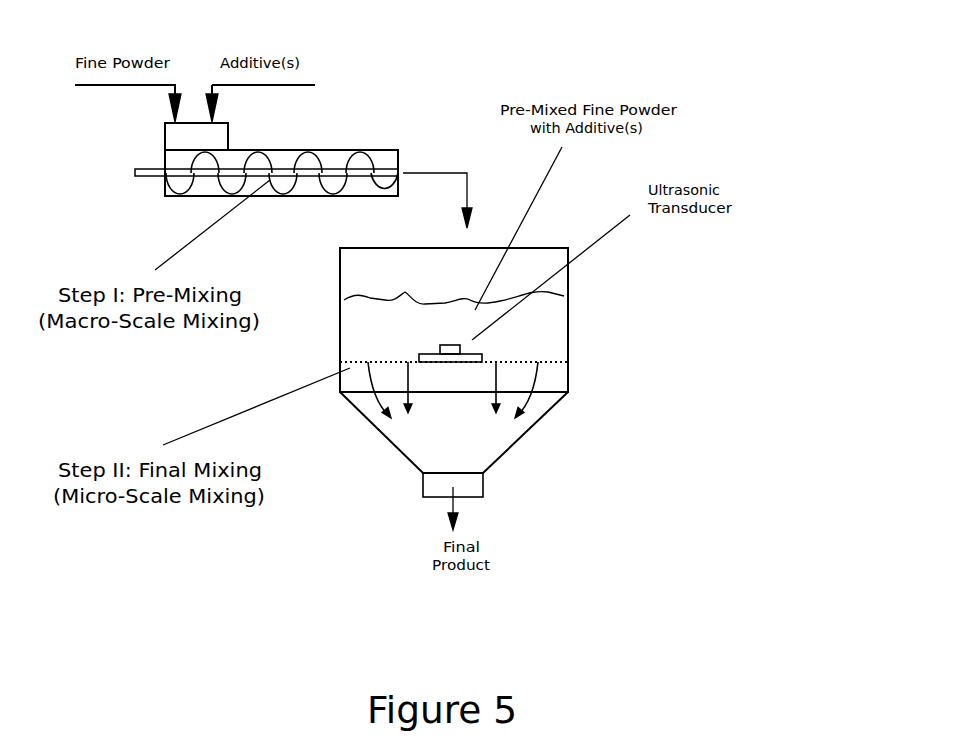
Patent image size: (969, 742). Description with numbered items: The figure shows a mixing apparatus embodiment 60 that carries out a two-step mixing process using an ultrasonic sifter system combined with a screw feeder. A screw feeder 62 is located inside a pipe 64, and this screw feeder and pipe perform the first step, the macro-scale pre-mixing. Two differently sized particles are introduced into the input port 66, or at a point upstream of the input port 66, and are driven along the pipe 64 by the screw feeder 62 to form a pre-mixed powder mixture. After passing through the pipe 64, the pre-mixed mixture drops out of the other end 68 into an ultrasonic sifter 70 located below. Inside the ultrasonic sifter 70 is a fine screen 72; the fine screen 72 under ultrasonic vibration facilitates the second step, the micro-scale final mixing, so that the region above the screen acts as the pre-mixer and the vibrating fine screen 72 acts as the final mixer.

The mixing apparatus embodiment 60 is at (732, 106).
The screw feeder 62 is at (272, 152).
The pipe 64 is at (203, 195).
The input port 66 is at (187, 135).
The other end 68 is at (400, 150).
The ultrasonic sifter 70 is at (570, 390).
The fine screen 72 is at (527, 357).